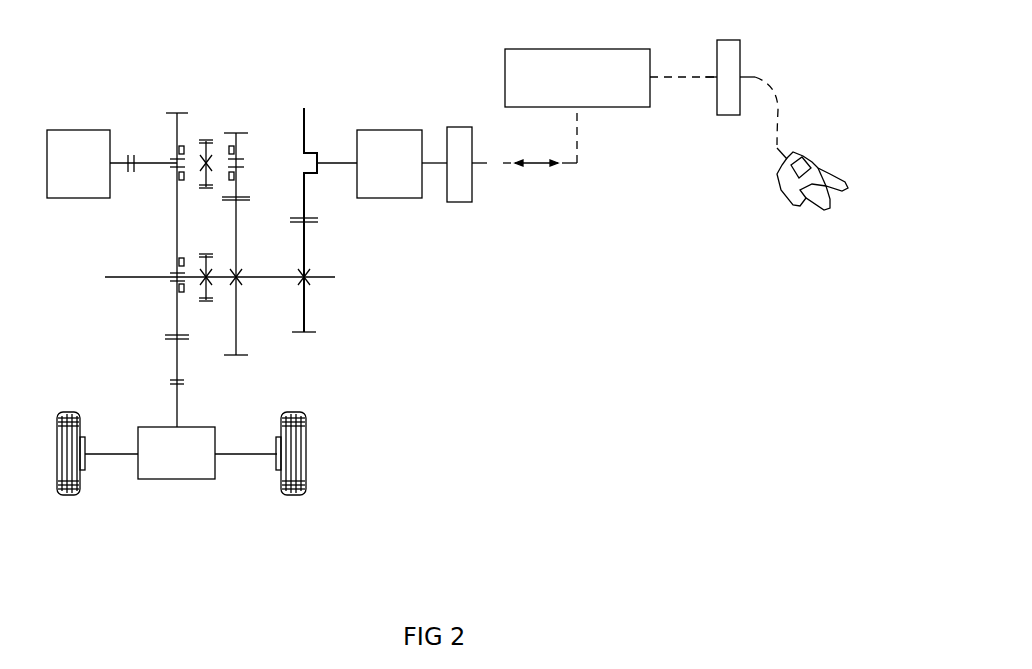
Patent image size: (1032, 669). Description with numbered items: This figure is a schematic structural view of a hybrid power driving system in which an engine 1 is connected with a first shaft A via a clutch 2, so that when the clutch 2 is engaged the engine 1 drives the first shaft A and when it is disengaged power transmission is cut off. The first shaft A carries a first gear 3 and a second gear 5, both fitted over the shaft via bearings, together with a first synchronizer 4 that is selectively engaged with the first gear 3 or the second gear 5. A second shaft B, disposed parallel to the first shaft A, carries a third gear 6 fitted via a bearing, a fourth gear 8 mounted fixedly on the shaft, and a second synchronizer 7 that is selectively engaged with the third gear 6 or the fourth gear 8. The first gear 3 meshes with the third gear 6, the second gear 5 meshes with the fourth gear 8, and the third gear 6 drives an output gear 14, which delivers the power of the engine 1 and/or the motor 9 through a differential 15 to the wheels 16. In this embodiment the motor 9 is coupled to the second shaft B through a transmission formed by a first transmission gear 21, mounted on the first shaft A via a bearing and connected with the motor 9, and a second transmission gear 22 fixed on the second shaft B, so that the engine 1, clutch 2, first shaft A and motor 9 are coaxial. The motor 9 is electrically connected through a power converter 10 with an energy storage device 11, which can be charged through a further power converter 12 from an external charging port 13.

The engine 1 is at (68, 200).
The clutch 2 is at (133, 152).
The first shaft A is at (160, 168).
The first gear 3 is at (180, 134).
The first synchronizer 4 is at (210, 190).
The second gear 5 is at (240, 152).
The first transmission gear 21 is at (308, 126).
The second shaft B is at (105, 279).
The third gear 6 is at (176, 292).
The second synchronizer 7 is at (205, 303).
The fourth gear 8 is at (238, 290).
The second transmission gear 22 is at (306, 290).
The output gear 14 is at (180, 360).
The motor 9 is at (392, 197).
The power converter 10 is at (460, 203).
The energy storage device 11 is at (570, 62).
The power converter 12 is at (727, 110).
The external charging port 13 is at (803, 212).
The differential 15 is at (175, 470).
The vehicle wheels 16 is at (82, 436).